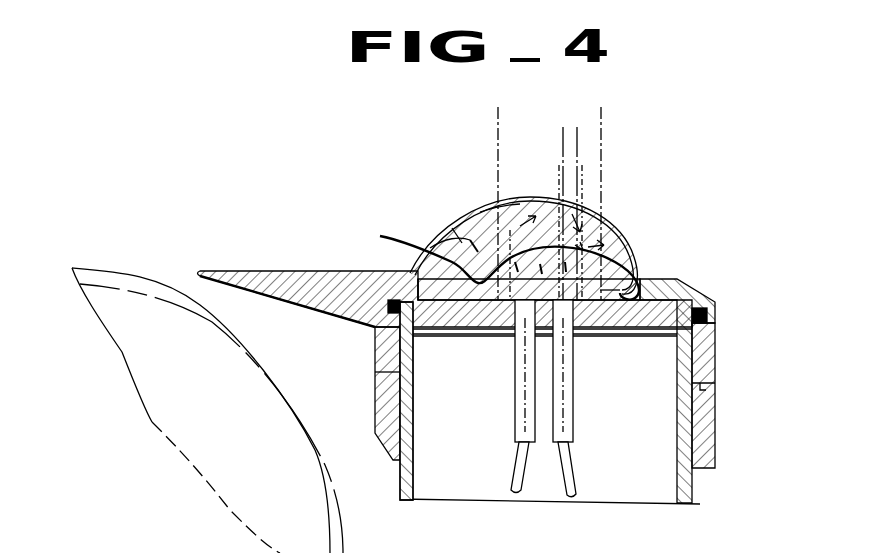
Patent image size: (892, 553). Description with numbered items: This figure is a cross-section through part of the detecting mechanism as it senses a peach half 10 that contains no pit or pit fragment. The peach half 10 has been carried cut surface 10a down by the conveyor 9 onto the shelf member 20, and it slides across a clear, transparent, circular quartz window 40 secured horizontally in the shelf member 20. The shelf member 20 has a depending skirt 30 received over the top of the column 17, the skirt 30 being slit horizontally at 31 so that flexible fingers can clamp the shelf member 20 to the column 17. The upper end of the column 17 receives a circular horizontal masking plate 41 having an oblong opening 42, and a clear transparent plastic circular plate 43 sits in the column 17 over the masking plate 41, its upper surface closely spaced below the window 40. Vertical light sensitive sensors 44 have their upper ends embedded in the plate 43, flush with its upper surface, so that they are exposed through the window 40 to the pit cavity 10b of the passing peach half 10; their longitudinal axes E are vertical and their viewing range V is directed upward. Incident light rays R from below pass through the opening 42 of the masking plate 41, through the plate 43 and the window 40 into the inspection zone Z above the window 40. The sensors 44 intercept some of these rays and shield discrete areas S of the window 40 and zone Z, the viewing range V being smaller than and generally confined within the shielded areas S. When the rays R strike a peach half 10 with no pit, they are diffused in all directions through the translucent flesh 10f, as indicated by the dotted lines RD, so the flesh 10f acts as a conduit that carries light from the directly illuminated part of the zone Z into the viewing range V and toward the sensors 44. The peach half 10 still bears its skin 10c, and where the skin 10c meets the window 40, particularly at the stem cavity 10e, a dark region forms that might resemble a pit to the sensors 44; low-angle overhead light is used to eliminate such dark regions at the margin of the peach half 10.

The conveyor 9 is at (110, 268).
The shelf member 20 is at (242, 270).
The peach half 10 is at (492, 248).
The cut surface 10a is at (416, 283).
The pit cavity 10b is at (446, 256).
The skin 10c is at (585, 248).
The stem cavity 10e is at (612, 290).
The flesh 10f is at (490, 220).
The diffused light rays RD is at (456, 226).
The quartz window 40 is at (667, 283).
The plastic circular plate 43 is at (706, 312).
The masking plate 41 is at (700, 331).
The oblong opening 42 is at (500, 336).
The depending skirt 30 is at (712, 368).
The horizontal slit 31 is at (702, 391).
The column 17 is at (685, 498).
The light sensitive sensors 44 is at (515, 433).
The incident light rays R is at (500, 352).
The longitudinal axes E is at (525, 411).
The inspection zone Z is at (601, 107).
The viewing range V is at (530, 137).
The shielded areas S is at (525, 172).